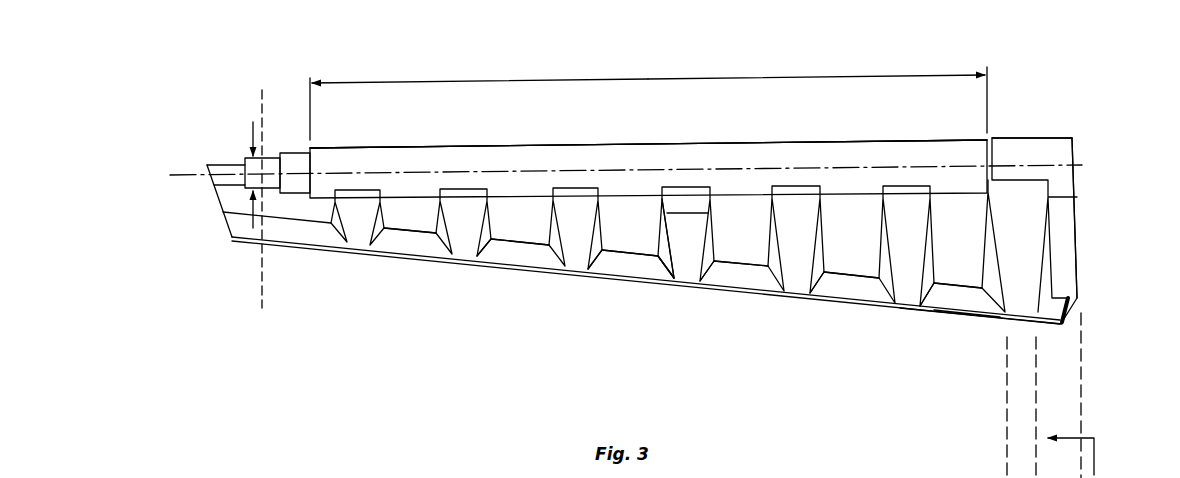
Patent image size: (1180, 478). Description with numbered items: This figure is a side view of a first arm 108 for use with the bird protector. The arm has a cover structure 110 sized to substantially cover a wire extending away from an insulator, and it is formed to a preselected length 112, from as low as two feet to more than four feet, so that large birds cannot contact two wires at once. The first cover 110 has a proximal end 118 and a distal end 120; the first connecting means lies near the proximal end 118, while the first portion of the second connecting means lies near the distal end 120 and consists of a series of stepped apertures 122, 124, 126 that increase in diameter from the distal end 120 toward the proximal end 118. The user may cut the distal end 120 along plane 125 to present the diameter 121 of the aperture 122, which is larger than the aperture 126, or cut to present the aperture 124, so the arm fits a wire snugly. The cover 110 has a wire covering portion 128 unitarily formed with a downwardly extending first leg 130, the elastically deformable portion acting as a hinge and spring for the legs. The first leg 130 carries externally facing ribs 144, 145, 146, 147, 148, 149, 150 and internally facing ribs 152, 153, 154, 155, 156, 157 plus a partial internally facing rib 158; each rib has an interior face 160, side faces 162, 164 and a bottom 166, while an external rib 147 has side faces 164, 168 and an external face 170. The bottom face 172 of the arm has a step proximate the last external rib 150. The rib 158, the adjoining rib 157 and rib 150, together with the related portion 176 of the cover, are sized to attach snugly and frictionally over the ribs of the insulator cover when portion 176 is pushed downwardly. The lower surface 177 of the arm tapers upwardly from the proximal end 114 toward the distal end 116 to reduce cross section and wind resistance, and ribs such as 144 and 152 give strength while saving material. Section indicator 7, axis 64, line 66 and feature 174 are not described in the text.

The section line 7 is at (1050, 395).
The longitudinal axis 64 is at (508, 168).
The workpiece surface 66 is at (1154, 477).
The first arm 108 is at (593, 117).
The cover structure 110 is at (397, 165).
The preselected length 112 is at (727, 80).
The proximal end 114 is at (1088, 142).
The distal end 116 is at (208, 216).
The proximal end 118 is at (984, 342).
The distal end 120 is at (295, 339).
The diameter 121 is at (250, 130).
The aperture 122 is at (270, 165).
The aperture 124 is at (298, 158).
The plane 125 is at (262, 275).
The aperture 126 is at (222, 165).
The wire covering portion 128 is at (675, 143).
The first leg 130 is at (800, 285).
The externally facing rib 144 is at (358, 233).
The externally facing rib 145 is at (458, 247).
The externally facing rib 146 is at (585, 262).
The externally facing rib 147 is at (702, 284).
The externally facing rib 148 is at (788, 292).
The externally facing rib 149 is at (905, 302).
The last external rib 150 is at (1030, 303).
The internally facing rib 152 is at (406, 222).
The internally facing rib 153 is at (520, 228).
The internally facing rib 154 is at (650, 265).
The internally facing rib 155 is at (762, 260).
The internally facing rib 156 is at (848, 262).
The internally facing rib 157 is at (945, 302).
The partial internally facing rib 158 is at (1064, 253).
The interior face 160 is at (625, 245).
The side face 162 is at (595, 262).
The side face 164 is at (673, 284).
The bottom 166 is at (662, 270).
The side face 168 is at (724, 277).
The external face 170 is at (687, 202).
The bottom face 172 is at (924, 306).
The base edge 174 is at (973, 317).
The portion of the cover 176 is at (1022, 138).
The lower surface 177 is at (478, 250).